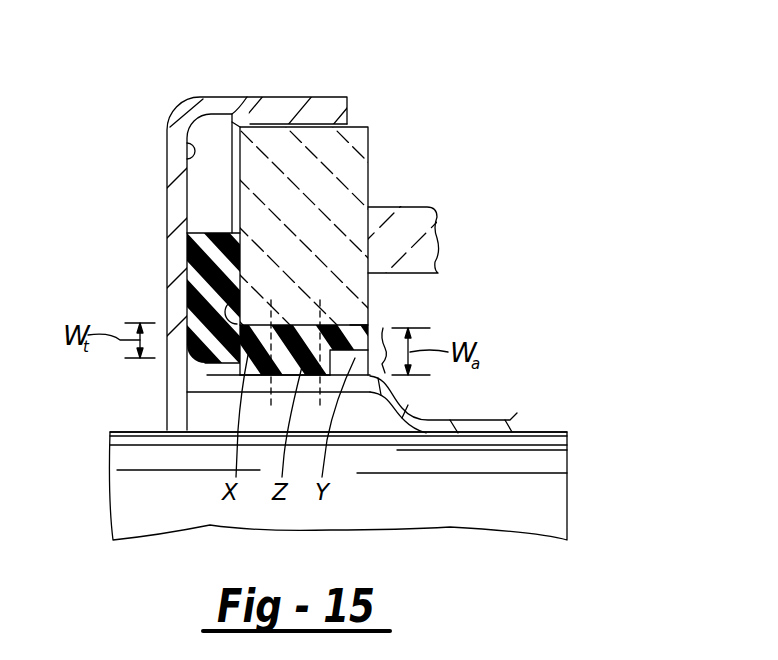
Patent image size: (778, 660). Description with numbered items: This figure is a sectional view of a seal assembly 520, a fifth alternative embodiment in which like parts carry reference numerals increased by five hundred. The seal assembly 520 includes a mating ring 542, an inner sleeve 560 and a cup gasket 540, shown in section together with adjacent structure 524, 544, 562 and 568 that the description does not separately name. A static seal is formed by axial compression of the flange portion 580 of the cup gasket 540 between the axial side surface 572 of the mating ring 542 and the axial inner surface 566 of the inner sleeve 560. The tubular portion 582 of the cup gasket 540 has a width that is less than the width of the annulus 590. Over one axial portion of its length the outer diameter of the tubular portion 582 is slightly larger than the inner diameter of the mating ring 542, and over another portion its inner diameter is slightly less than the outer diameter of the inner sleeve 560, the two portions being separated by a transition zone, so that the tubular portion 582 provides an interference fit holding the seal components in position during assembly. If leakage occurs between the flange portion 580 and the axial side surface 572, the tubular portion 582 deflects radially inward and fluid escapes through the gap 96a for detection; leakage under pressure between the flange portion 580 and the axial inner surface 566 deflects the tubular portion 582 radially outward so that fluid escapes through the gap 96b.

The axial inner surface 566 is at (172, 125).
The top flange 568 is at (215, 102).
The axial side surface 572 is at (236, 112).
The mating ring 542 is at (355, 152).
The projection 544 is at (417, 215).
The cup gasket 540 is at (228, 233).
The flange portion 580 is at (190, 294).
The tubular portion 582 is at (200, 352).
The annulus 590 is at (388, 327).
The gap 96a is at (355, 332).
The shell bottom wall 562 is at (183, 392).
The inner sleeve 560 is at (515, 421).
The gap 96b is at (232, 363).
The base plate 524 is at (468, 513).
The seal assembly 520 is at (630, 357).